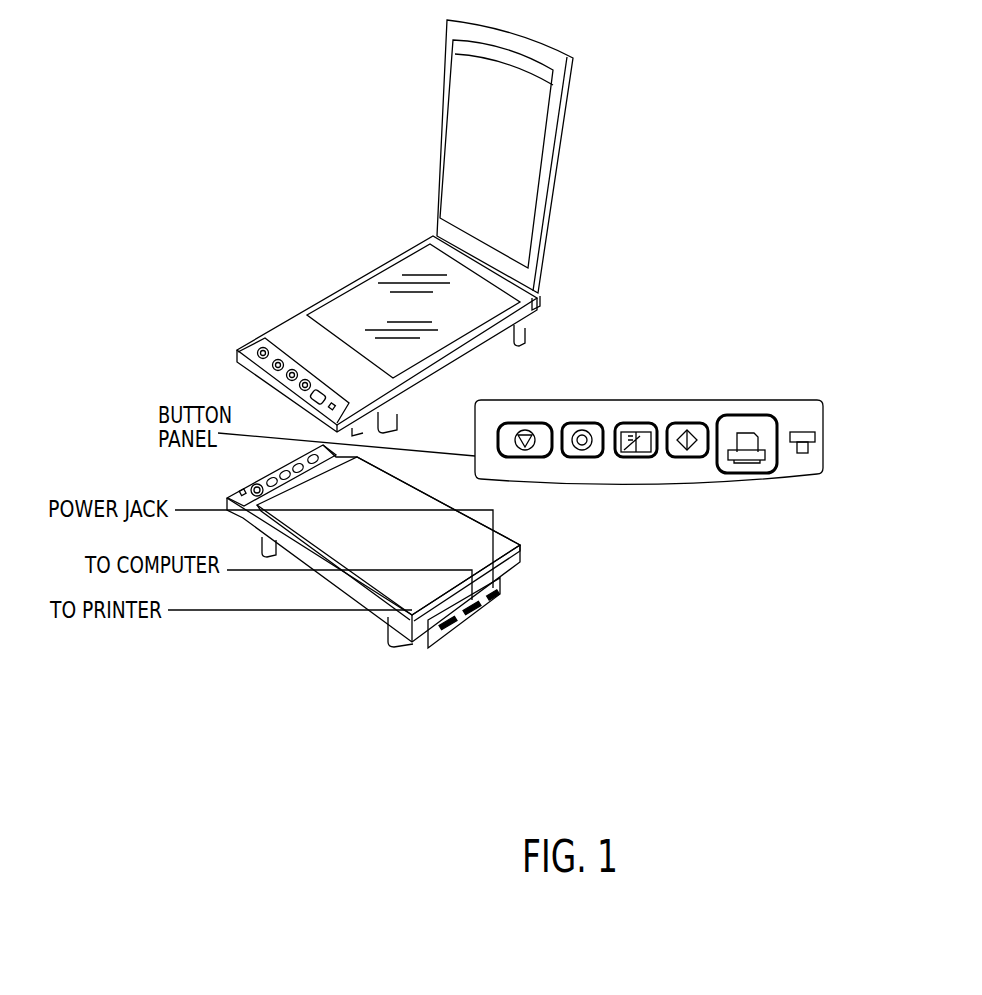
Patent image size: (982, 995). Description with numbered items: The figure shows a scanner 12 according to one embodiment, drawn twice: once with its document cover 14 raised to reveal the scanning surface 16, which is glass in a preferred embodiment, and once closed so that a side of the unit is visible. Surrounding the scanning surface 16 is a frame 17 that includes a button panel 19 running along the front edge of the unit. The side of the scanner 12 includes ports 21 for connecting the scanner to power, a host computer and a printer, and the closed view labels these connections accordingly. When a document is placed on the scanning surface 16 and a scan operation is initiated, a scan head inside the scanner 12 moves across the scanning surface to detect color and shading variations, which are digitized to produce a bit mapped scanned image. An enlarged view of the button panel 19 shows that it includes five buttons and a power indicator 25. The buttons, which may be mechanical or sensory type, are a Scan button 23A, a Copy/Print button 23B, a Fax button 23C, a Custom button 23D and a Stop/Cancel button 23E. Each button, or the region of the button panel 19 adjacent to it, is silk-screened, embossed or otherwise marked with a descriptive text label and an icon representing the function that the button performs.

The scanner 12 is at (539, 297).
The document cover 14 is at (437, 108).
The scanning surface 16 is at (372, 315).
The frame 17 is at (308, 302).
The button panel 19 is at (233, 490).
The ports 21 is at (496, 594).
The Scan button 23A is at (747, 415).
The Copy/Print button 23B is at (685, 423).
The Fax button 23C is at (634, 423).
The Custom button 23D is at (581, 423).
The Stop/Cancel button 23E is at (521, 423).
The power indicator 25 is at (823, 446).